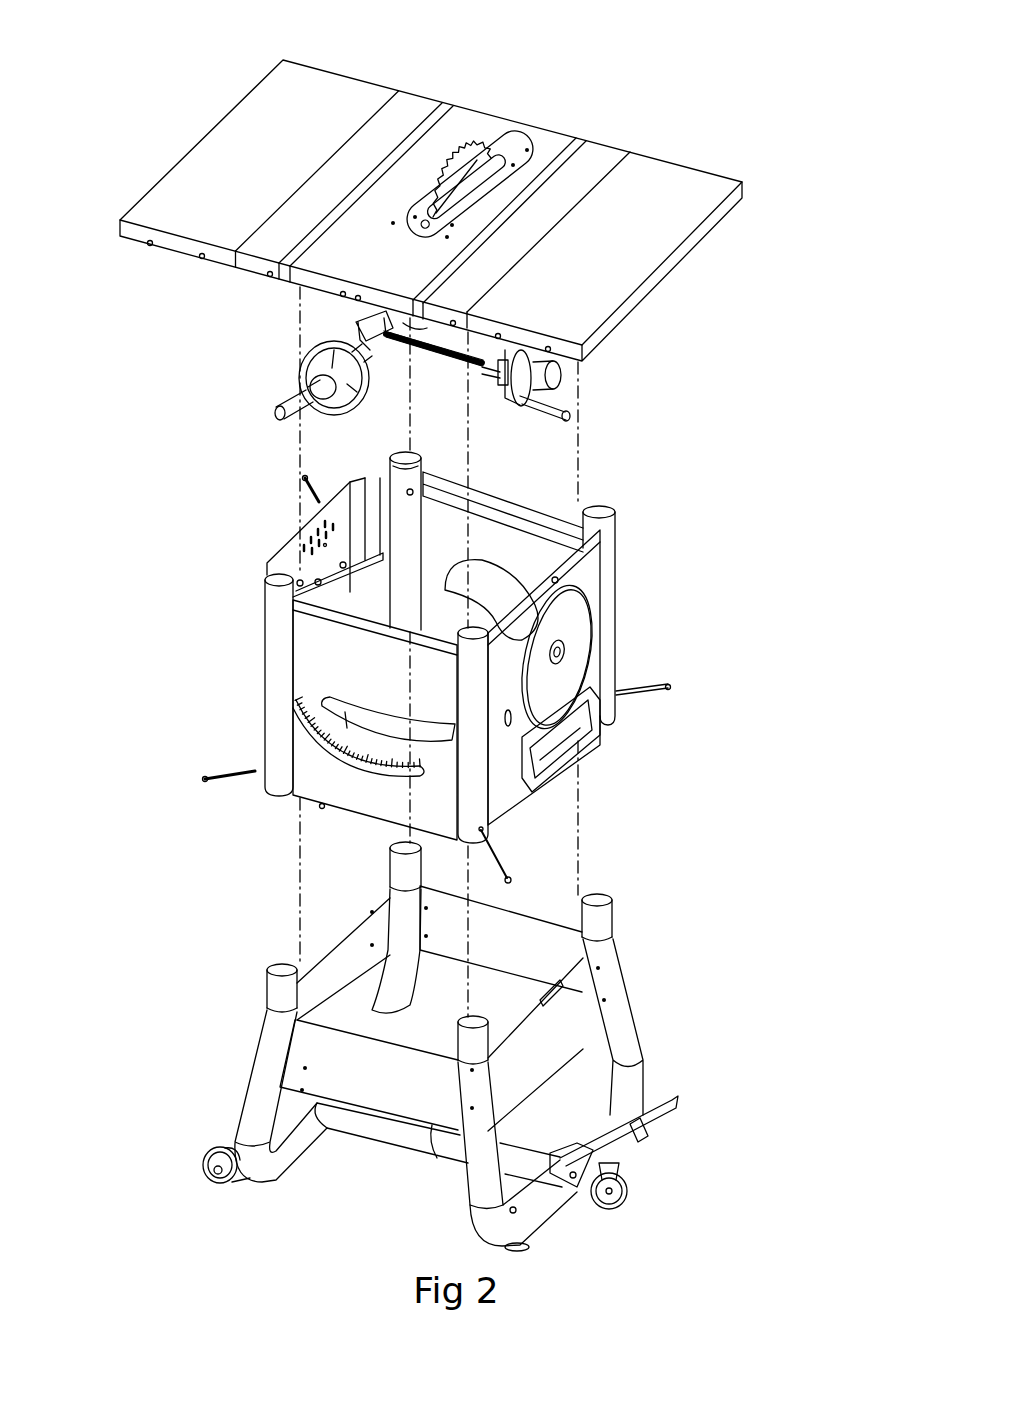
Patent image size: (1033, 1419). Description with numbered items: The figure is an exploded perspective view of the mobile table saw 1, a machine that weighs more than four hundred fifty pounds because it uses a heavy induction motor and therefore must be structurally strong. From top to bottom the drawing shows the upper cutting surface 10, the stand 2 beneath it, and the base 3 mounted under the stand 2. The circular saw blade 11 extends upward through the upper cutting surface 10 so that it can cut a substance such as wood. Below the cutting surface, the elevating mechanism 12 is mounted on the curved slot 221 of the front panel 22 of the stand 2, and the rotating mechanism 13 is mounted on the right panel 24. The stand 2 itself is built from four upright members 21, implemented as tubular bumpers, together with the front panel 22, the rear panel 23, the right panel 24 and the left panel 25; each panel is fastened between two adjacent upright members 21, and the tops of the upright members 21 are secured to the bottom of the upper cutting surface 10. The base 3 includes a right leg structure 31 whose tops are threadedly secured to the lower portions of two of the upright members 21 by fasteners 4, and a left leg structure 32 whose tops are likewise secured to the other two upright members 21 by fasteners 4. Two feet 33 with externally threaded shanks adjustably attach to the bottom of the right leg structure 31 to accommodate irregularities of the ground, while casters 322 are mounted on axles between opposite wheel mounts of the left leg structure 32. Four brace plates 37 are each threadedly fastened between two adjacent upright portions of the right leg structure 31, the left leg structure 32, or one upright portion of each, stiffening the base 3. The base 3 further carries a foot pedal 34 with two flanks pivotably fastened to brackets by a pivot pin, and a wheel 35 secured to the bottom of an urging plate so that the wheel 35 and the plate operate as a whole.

The mobile table saw 1 is at (681, 135).
The upper cutting surface 10 is at (688, 194).
The circular saw blade 11 is at (477, 142).
The elevating mechanism 12 is at (300, 358).
The rotating mechanism 13 is at (557, 393).
The stand 2 is at (665, 647).
The upright members 21 is at (408, 520).
The front panel 22 is at (320, 655).
The curved slot 221 is at (310, 728).
The rear panel 23 is at (495, 550).
The right panel 24 is at (590, 585).
The left panel 25 is at (285, 546).
The fasteners 4 is at (297, 483).
The base 3 is at (693, 1033).
The right leg structure 31 is at (620, 977).
The left leg structure 32 is at (267, 1038).
The caster 322 is at (210, 1160).
The feet 33 is at (535, 1248).
The foot pedal 34 is at (630, 1138).
The wheel 35 is at (630, 1195).
The brace plates 37 is at (350, 968).